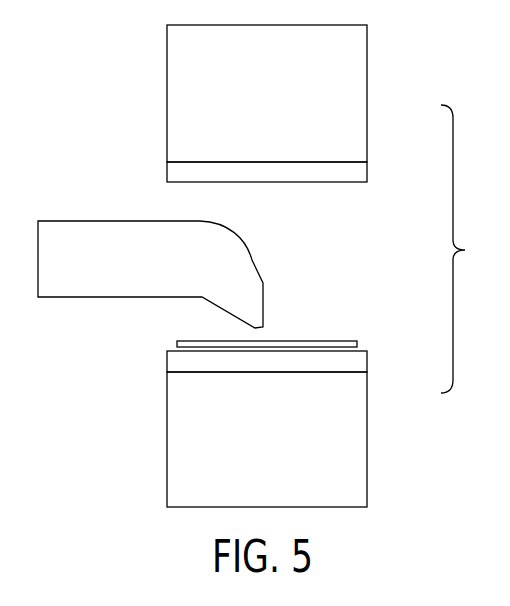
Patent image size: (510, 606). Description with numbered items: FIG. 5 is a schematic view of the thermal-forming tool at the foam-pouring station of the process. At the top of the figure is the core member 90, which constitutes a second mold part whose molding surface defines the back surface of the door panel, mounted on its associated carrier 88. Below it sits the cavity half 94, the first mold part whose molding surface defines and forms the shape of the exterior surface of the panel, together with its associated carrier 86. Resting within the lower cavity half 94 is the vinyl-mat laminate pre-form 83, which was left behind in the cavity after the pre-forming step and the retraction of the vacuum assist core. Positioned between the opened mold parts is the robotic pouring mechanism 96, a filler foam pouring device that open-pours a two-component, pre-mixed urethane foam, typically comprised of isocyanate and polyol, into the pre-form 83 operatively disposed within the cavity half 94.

The carrier 88 is at (367, 110).
The core member 90 is at (357, 178).
The robotic pouring mechanism 96 is at (253, 258).
The vinyl-mat laminate pre-form 83 is at (357, 343).
The cavity half 94 is at (367, 362).
The carrier 86 is at (367, 440).